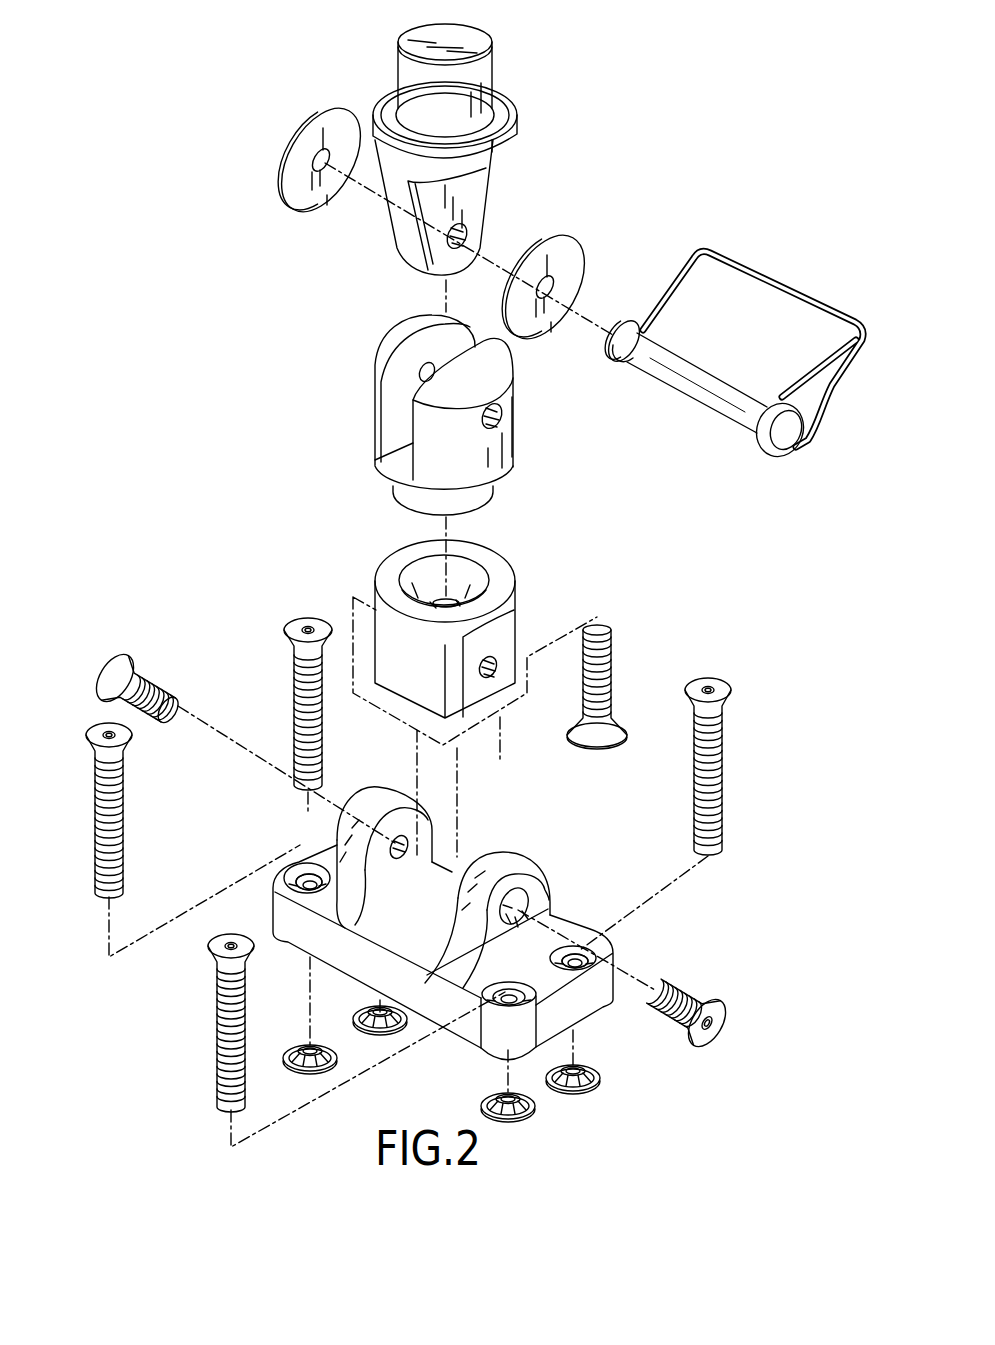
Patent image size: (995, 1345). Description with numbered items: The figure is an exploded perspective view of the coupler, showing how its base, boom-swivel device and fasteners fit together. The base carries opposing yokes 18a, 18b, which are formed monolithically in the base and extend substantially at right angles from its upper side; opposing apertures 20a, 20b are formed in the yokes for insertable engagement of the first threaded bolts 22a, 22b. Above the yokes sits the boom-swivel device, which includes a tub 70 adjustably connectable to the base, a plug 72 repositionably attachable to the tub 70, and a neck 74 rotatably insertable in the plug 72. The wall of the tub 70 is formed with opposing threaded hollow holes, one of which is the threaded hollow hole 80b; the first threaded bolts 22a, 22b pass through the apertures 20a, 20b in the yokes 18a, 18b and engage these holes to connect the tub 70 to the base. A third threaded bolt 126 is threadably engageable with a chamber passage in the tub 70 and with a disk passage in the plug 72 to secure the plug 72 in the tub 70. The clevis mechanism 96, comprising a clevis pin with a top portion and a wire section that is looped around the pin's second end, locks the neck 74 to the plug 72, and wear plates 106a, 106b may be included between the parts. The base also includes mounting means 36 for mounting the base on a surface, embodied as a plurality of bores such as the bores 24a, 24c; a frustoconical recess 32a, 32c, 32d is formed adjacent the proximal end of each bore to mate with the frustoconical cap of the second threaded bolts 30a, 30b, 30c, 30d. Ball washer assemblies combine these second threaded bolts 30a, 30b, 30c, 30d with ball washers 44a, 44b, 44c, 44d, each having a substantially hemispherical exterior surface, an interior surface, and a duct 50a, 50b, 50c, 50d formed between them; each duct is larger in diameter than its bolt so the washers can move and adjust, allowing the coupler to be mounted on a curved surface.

The neck 74 is at (513, 117).
The wear plate 106a is at (297, 203).
The wear plate 106b is at (567, 273).
The plug 72 is at (516, 430).
The clevis mechanism 96 is at (699, 417).
The tub 70 is at (499, 653).
The threaded hollow hole 80b is at (493, 673).
The third threaded bolt 126 is at (625, 660).
The second threaded bolt 30a is at (96, 780).
The second threaded bolt 30b is at (294, 688).
The second threaded bolt 30c is at (725, 732).
The second threaded bolt 30d is at (215, 1033).
The first threaded bolt 22a is at (152, 668).
The first threaded bolt 22b is at (680, 985).
The mounting means 36 is at (518, 897).
The opposing yoke 18a is at (418, 815).
The opposing yoke 18b is at (524, 906).
The opposing aperture 20a is at (408, 847).
The opposing aperture 20b is at (520, 910).
The bore 24a is at (312, 884).
The bore 24c is at (577, 958).
The frustoconical recess 32a is at (290, 878).
The frustoconical recess 32c is at (594, 958).
The frustoconical recess 32d is at (508, 998).
The ball washer 44a is at (285, 1062).
The ball washer 44b is at (350, 1071).
The ball washer 44c is at (625, 1105).
The ball washer 44d is at (507, 1136).
The duct 50a is at (307, 1047).
The duct 50b is at (380, 1015).
The duct 50c is at (578, 1077).
The duct 50d is at (507, 1094).